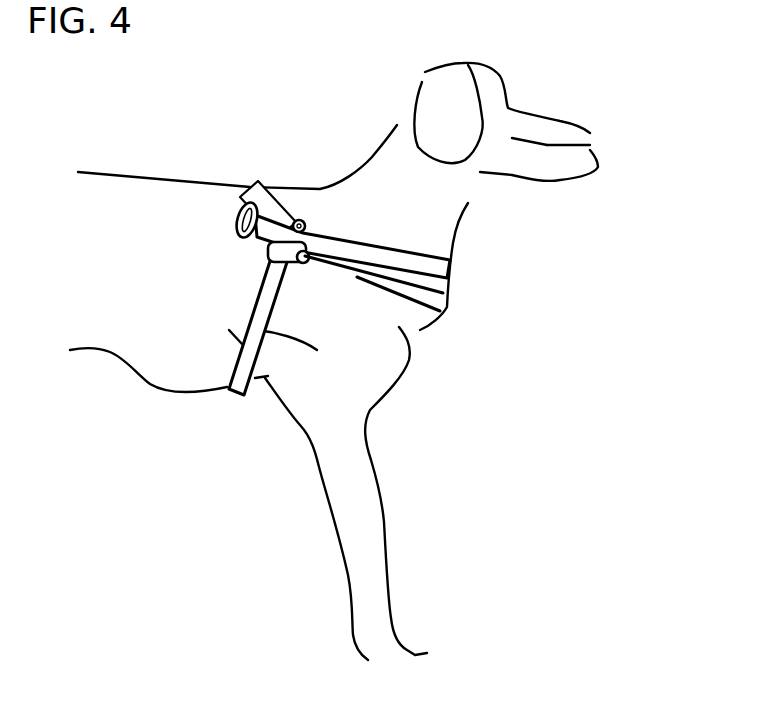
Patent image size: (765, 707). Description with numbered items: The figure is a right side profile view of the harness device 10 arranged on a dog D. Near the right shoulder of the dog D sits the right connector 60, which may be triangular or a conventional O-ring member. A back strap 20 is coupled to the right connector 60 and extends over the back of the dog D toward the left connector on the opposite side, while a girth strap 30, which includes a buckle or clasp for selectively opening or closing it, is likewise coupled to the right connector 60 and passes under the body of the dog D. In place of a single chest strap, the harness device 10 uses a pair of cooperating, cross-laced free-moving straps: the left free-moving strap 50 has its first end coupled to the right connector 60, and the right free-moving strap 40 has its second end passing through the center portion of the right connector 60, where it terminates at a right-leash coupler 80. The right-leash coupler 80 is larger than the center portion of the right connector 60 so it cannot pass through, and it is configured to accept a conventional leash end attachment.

The dog D is at (140, 215).
The harness device 10 is at (397, 242).
The back strap 20 is at (263, 188).
The girth strap 30 is at (287, 325).
The right free-moving strap 40 is at (275, 232).
The left free-moving strap 50 is at (358, 253).
The right connector 60 is at (293, 267).
The right-leash coupler 80 is at (220, 228).